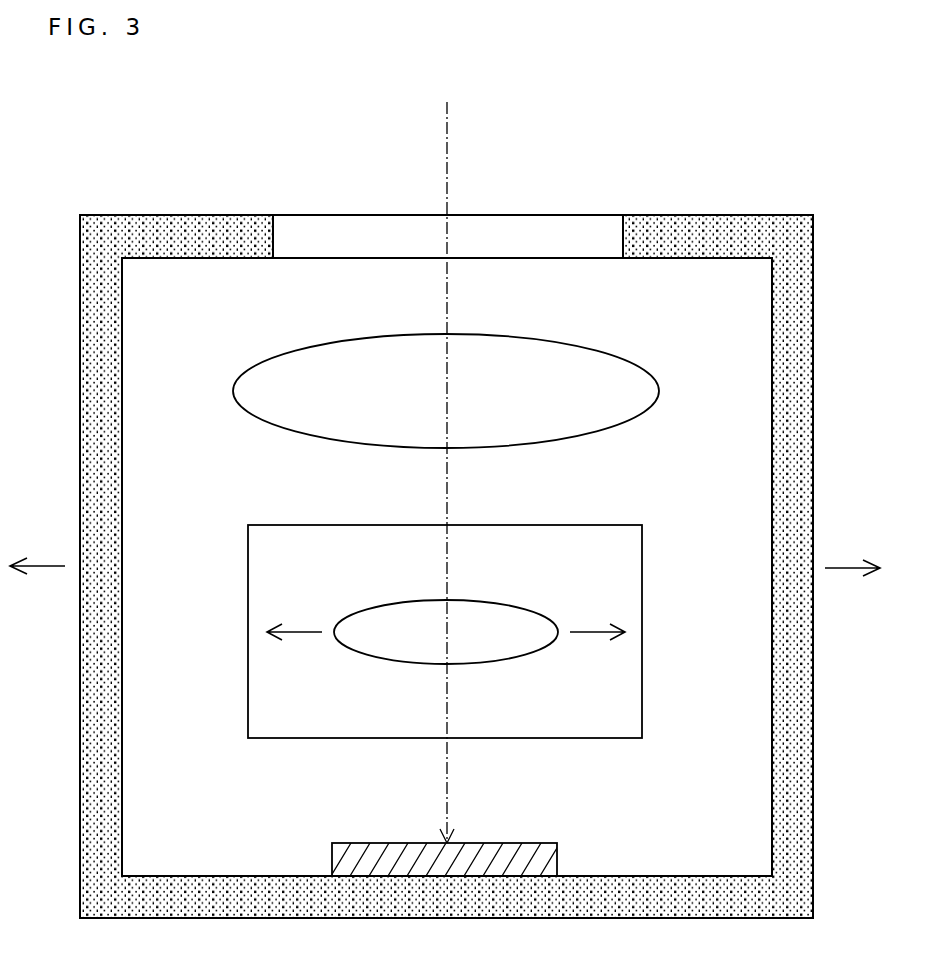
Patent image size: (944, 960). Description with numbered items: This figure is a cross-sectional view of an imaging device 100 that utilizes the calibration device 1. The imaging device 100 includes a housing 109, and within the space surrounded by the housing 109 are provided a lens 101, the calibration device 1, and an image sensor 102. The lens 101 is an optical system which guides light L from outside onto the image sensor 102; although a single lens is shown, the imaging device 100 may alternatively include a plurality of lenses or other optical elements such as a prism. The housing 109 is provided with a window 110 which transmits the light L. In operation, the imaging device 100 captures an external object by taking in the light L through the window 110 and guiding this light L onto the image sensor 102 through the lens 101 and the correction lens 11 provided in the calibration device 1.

The imaging device 100 is at (802, 146).
The housing 109 is at (815, 337).
The window 110 is at (566, 224).
The light L is at (450, 113).
The lens 101 is at (659, 387).
The calibration device 1 is at (643, 581).
The correction lens 11 is at (502, 598).
The image sensor 102 is at (513, 843).